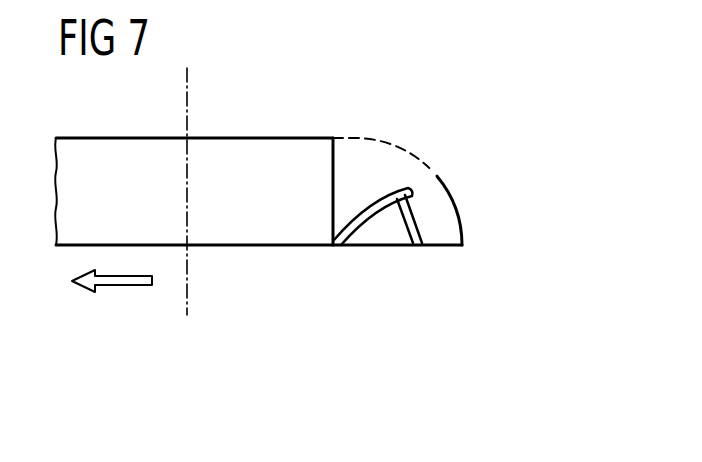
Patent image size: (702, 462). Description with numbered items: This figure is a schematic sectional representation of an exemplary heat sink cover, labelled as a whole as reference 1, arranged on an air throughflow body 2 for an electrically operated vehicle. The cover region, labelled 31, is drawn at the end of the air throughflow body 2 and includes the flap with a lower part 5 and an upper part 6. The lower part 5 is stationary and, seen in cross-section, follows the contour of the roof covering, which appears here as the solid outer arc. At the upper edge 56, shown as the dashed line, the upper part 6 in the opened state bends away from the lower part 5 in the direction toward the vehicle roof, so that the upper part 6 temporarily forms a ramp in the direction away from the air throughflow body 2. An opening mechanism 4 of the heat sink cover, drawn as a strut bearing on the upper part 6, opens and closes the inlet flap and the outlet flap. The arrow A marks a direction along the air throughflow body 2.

The flow component assembly 1 is at (308, 189).
The air throughflow body 2 is at (255, 236).
The opening mechanism 4 is at (421, 244).
The head portion 31 is at (447, 216).
The lower part 5 is at (460, 215).
The upper part 6 is at (366, 218).
The upper edge 56 is at (432, 167).
The direction of flow A is at (122, 291).